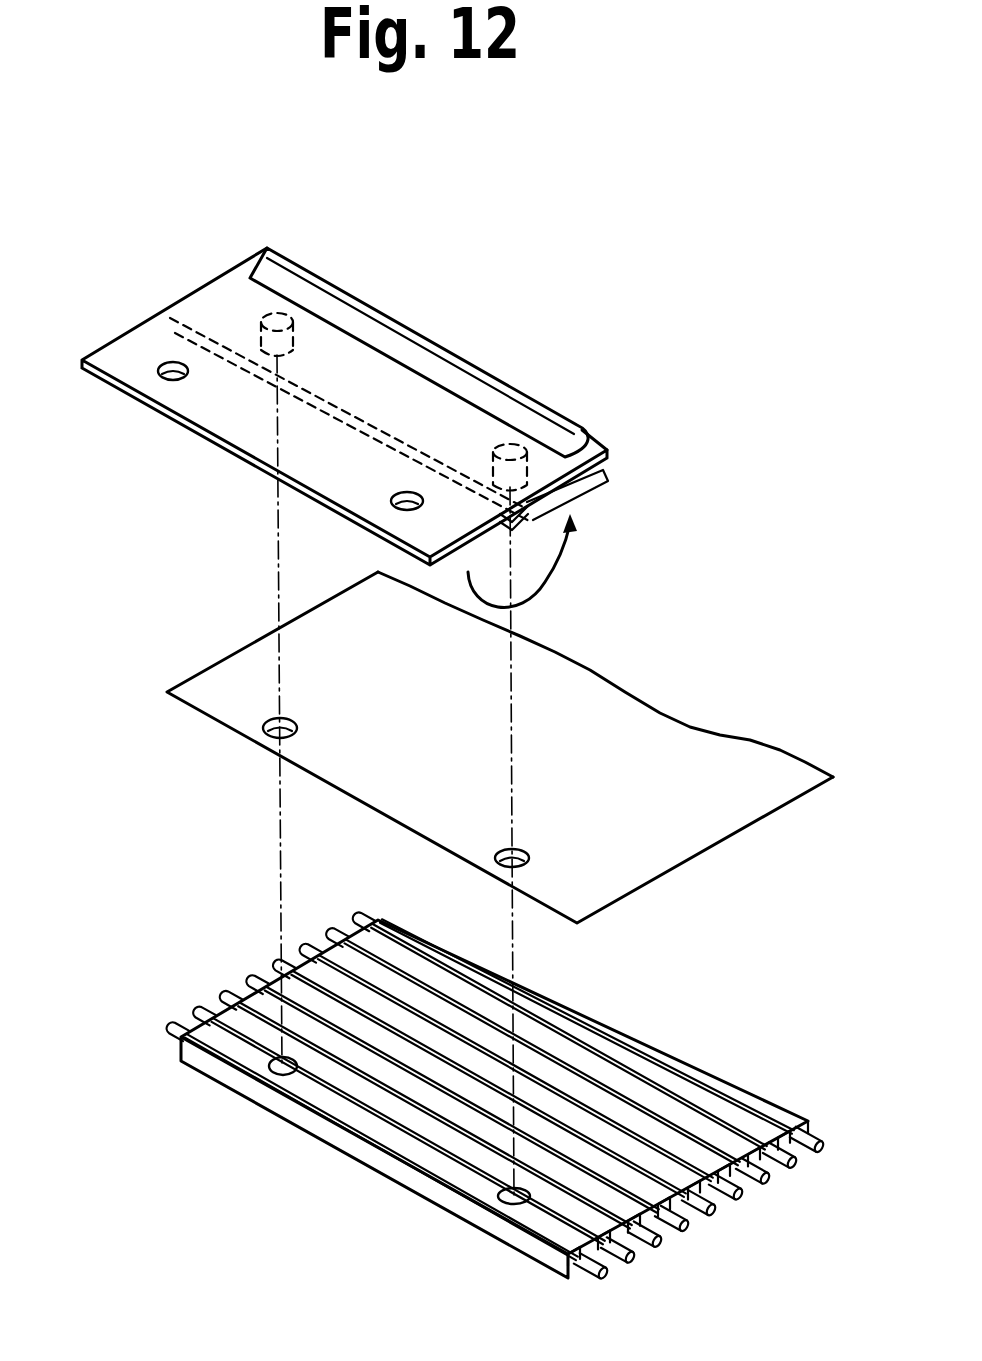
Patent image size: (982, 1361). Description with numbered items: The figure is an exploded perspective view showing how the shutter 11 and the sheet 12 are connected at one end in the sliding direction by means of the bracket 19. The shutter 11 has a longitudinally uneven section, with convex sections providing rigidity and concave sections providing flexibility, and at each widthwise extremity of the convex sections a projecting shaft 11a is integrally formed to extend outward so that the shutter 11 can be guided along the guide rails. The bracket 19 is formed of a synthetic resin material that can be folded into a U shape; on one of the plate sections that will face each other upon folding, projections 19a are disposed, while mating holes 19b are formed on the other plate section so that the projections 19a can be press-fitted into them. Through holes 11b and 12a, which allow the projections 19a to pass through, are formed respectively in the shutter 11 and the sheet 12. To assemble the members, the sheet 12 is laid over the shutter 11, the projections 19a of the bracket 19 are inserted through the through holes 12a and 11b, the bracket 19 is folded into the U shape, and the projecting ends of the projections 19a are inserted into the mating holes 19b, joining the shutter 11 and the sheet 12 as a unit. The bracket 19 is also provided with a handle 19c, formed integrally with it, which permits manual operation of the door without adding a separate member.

The shutter 11 is at (743, 1097).
The projecting shaft 11a is at (228, 992).
The through hole 11b is at (283, 1066).
The sheet 12 is at (693, 733).
The through hole 12a is at (277, 722).
The bracket 19 is at (598, 462).
The projection 19a is at (262, 323).
The mating hole 19b is at (173, 368).
The handle 19c is at (352, 308).